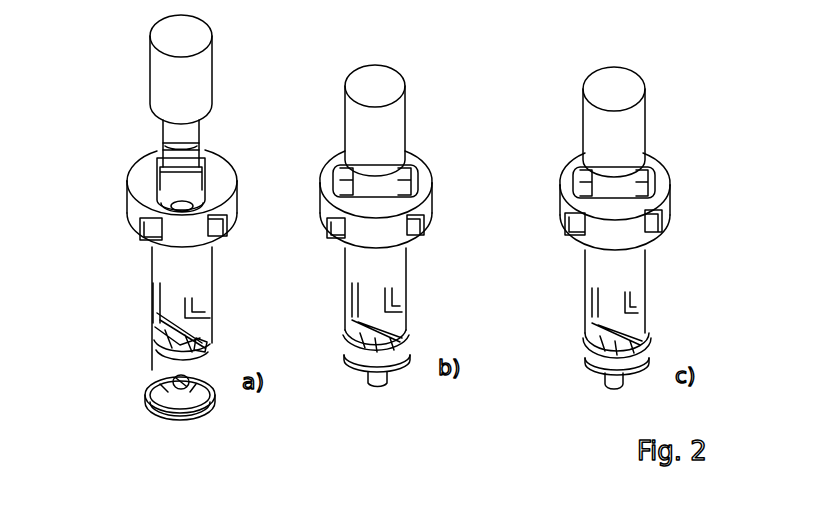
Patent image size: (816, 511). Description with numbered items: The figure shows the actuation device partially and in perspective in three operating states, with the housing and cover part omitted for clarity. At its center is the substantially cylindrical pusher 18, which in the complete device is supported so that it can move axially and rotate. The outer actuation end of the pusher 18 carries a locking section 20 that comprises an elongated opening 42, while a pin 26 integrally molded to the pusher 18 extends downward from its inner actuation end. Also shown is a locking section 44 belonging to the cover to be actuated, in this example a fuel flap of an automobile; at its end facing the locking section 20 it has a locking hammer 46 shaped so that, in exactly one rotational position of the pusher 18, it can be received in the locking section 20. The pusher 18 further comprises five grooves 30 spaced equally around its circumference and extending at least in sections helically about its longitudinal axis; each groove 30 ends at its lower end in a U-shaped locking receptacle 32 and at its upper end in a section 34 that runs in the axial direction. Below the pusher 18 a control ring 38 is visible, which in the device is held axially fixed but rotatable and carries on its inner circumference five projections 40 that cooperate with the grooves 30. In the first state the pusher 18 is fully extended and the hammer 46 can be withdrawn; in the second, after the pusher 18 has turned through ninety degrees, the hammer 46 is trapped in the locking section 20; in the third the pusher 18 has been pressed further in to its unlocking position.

The pusher 18 is at (198, 262).
The locking section 20 is at (138, 183).
The pin 26 is at (184, 384).
The grooves 30 is at (160, 323).
The locking receptacle 32 is at (207, 340).
The section 34 is at (195, 298).
The control ring 38 is at (168, 420).
The projections 40 is at (152, 386).
The elongated opening 42 is at (198, 181).
The locking section 44 is at (180, 127).
The locking hammer 46 is at (198, 152).